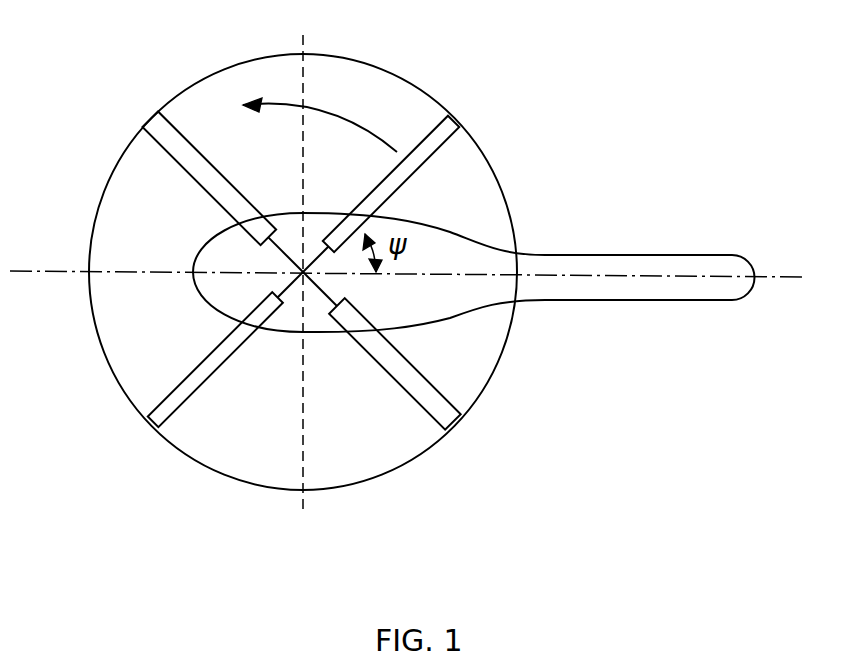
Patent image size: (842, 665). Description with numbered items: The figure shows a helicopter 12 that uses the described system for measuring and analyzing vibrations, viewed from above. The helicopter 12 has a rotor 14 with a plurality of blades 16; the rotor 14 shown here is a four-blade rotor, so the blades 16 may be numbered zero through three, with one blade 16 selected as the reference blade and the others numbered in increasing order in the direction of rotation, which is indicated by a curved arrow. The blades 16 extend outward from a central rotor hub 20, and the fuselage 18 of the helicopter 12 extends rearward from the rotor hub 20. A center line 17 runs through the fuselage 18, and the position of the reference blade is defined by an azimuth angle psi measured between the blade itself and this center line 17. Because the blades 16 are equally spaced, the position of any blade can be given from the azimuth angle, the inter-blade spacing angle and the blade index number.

The helicopter 12 is at (508, 167).
The rotor 14 is at (390, 422).
The blades 16 is at (157, 123).
The center line 17 is at (787, 277).
The fuselage 18 is at (528, 302).
The rotor hub 20 is at (232, 313).